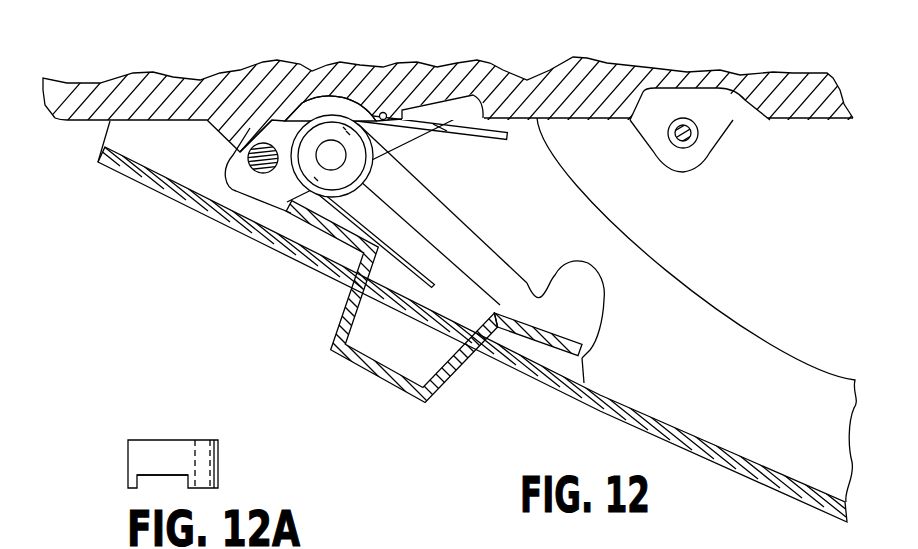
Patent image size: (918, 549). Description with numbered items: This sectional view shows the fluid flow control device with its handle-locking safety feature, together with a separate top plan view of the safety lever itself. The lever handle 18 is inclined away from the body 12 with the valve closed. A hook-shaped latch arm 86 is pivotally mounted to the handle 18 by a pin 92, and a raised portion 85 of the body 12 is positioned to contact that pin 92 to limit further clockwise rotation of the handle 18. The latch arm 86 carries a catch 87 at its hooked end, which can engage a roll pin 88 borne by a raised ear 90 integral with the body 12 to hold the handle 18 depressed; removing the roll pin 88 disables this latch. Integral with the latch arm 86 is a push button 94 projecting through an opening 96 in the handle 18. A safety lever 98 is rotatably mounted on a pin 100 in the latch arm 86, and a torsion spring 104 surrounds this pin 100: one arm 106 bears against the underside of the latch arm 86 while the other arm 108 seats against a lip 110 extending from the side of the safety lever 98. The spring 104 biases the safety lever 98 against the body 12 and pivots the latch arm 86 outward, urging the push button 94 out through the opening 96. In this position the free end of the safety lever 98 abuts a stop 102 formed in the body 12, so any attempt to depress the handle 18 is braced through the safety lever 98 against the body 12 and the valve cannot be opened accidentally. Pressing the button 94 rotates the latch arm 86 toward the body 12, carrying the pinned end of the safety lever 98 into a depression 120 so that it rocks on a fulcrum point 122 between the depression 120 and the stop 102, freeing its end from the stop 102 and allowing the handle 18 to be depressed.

In FIG. 12, the body 12 is at (625, 75).
In FIG. 12, the handle 18 is at (660, 443).
In FIG. 12, the raised portion 85 is at (227, 143).
In FIG. 12, the latch arm 86 is at (463, 245).
In FIG. 12, the catch 87 is at (558, 268).
In FIG. 12, the roll pin 88 is at (692, 135).
In FIG. 12, the raised ear 90 is at (675, 154).
In FIG. 12, the pin 92 is at (248, 161).
In FIG. 12, the push button 94 is at (360, 367).
In FIG. 12, the opening 96 is at (486, 343).
In FIG. 12, the safety lever 98 is at (402, 142).
In FIG. 12A, the safety lever 98 is at (155, 450).
In FIG. 12, the pin 100 is at (334, 158).
In FIG. 12, the stop 102 is at (470, 103).
In FIG. 12, the torsion spring 104 is at (292, 113).
In FIG. 12, the spring arm 106 is at (405, 276).
In FIG. 12, the spring arm 108 is at (468, 136).
In FIG. 12, the lip 110 is at (440, 118).
In FIG. 12A, the lip 110 is at (150, 483).
In FIG. 12, the depression 120 is at (314, 97).
In FIG. 12, the fulcrum point 122 is at (383, 112).